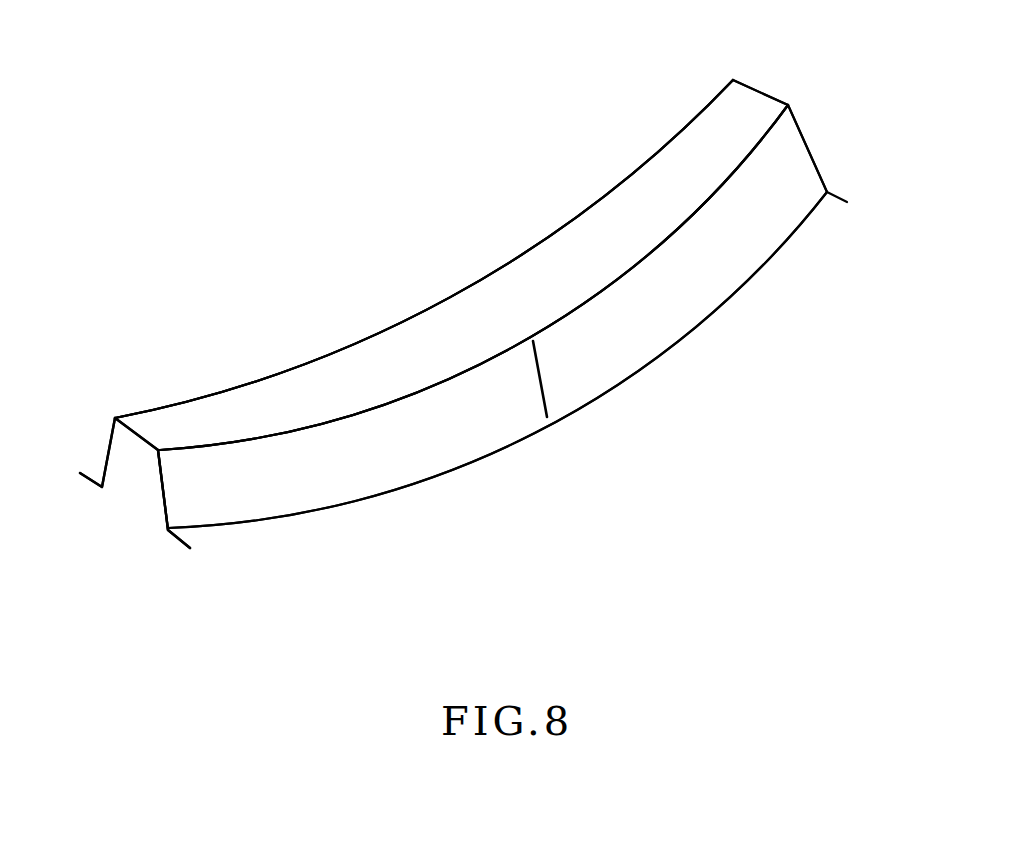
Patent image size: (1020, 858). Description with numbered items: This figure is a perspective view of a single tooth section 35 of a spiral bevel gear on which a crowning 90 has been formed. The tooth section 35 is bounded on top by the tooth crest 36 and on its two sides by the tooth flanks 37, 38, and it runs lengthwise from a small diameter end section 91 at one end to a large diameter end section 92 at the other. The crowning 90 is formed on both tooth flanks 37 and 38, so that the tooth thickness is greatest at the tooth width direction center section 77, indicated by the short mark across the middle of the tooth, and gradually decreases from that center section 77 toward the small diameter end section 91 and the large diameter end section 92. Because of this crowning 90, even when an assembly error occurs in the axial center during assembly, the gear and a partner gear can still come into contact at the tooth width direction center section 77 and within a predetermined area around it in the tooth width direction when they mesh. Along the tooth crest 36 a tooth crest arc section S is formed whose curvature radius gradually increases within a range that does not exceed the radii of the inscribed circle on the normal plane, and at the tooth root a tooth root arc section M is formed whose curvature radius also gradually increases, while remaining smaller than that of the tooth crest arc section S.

The tooth section 35 is at (280, 184).
The tooth crest 36 is at (562, 260).
The tooth flank 37 is at (797, 162).
The tooth flank 38 is at (108, 437).
The tooth width direction center section 77 is at (557, 446).
The crowning 90 is at (750, 230).
The small diameter end section 91 is at (133, 507).
The large diameter end section 92 is at (816, 113).
The tooth crest arc section S is at (508, 258).
The tooth root arc section M is at (100, 483).